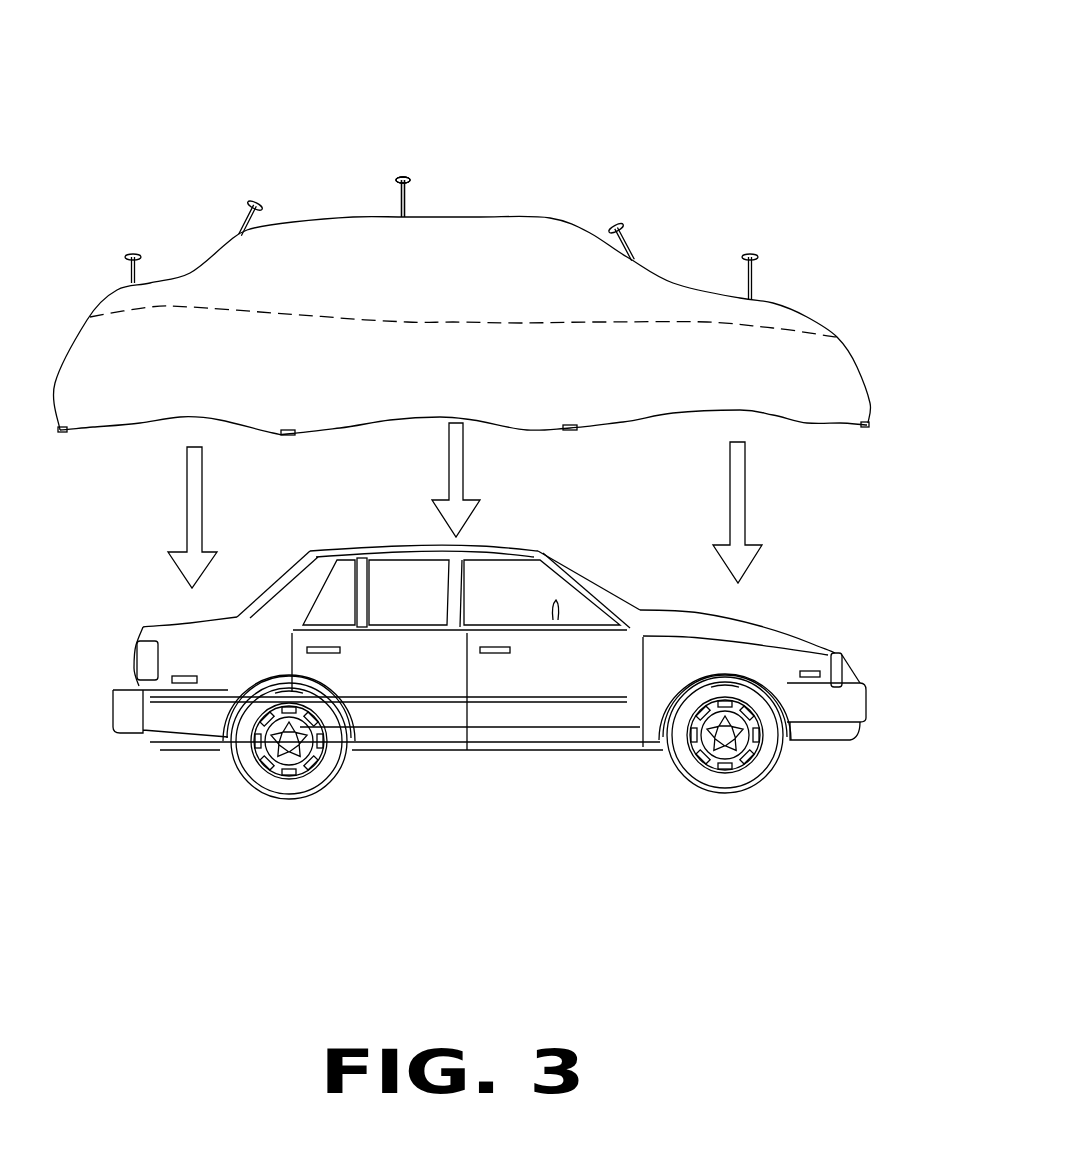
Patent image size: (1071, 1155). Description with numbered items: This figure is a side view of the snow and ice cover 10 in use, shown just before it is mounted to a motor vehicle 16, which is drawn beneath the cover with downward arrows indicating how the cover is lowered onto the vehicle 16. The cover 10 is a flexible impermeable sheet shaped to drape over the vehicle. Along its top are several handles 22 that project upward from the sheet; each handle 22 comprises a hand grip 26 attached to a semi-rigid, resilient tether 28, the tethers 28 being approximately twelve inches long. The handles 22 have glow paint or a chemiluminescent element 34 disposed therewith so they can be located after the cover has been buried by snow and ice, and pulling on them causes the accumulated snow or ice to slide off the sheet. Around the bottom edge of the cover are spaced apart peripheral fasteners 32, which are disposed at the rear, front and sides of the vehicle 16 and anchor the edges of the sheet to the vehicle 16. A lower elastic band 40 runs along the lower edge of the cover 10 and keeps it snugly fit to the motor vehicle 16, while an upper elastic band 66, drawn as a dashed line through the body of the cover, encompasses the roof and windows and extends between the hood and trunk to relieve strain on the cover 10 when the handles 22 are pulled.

The snow and ice cover 10 is at (461, 248).
The motor vehicle 16 is at (478, 747).
The handles 22 is at (132, 240).
The hand grip 26 is at (412, 177).
The tether 28 is at (408, 195).
The peripheral fasteners 32 is at (65, 433).
The chemiluminescent element 34 is at (397, 178).
The lower elastic band 40 is at (660, 413).
The upper elastic band 66 is at (510, 323).